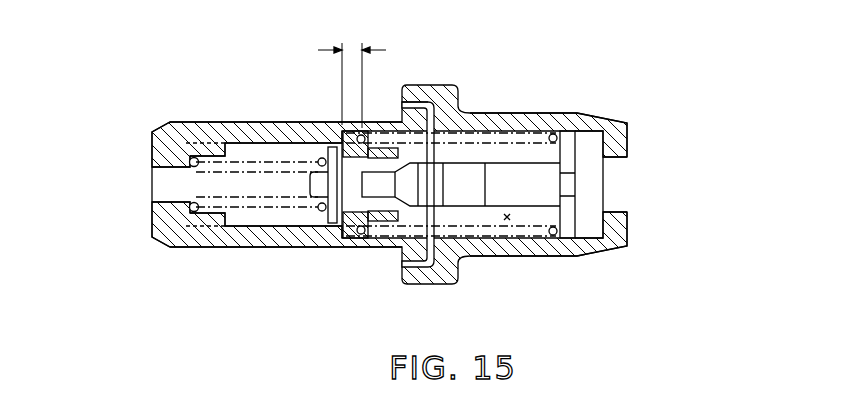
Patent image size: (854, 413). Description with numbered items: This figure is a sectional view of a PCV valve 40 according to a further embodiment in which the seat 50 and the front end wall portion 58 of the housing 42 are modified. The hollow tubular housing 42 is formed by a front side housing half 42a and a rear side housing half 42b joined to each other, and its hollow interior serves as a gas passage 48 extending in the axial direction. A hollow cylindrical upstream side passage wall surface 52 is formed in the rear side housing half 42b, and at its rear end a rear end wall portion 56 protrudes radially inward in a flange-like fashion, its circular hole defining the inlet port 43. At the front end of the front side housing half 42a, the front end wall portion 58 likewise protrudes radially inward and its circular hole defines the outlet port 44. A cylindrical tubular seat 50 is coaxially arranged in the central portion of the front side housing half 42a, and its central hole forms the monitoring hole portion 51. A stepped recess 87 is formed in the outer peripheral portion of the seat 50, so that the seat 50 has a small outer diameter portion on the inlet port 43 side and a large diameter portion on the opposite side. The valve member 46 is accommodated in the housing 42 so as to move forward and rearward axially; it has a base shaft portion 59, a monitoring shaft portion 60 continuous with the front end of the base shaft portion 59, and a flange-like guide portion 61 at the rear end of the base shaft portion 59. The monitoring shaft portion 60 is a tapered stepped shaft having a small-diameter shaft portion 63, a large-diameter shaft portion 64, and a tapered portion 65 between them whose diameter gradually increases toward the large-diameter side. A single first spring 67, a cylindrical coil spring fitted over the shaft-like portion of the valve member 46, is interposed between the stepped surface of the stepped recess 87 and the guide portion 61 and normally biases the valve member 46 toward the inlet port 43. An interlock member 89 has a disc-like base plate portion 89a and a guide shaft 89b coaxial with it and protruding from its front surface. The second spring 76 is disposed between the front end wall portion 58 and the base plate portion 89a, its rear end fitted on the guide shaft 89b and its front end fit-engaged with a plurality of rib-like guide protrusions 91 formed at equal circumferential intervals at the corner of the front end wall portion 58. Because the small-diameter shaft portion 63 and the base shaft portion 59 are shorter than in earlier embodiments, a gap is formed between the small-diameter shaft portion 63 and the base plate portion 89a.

The PCV valve 40 is at (494, 58).
The housing 42 is at (440, 88).
The front side housing half 42a is at (258, 121).
The rear side housing half 42b is at (550, 113).
The inlet port 43 is at (618, 190).
The outlet port 44 is at (155, 188).
The valve member 46 is at (513, 156).
The gas passage 48 is at (507, 220).
The seat 50 is at (377, 160).
The monitoring hole portion 51 is at (340, 163).
The upstream side passage wall surface 52 is at (603, 131).
The rear end wall portion 56 is at (630, 140).
The front end wall portion 58 is at (157, 160).
The base shaft portion 59 is at (538, 208).
The monitoring shaft portion 60 is at (430, 267).
The guide portion 61 is at (566, 242).
The small-diameter shaft portion 63 is at (383, 233).
The large-diameter shaft portion 64 is at (464, 199).
The tapered portion 65 is at (414, 103).
The first spring 67 is at (356, 247).
The second spring 76 is at (193, 209).
The stepped recess 87 is at (362, 233).
The interlock member 89 is at (290, 243).
The base plate portion 89a is at (323, 214).
The guide shaft 89b is at (316, 188).
The guide protrusions 91 is at (210, 148).